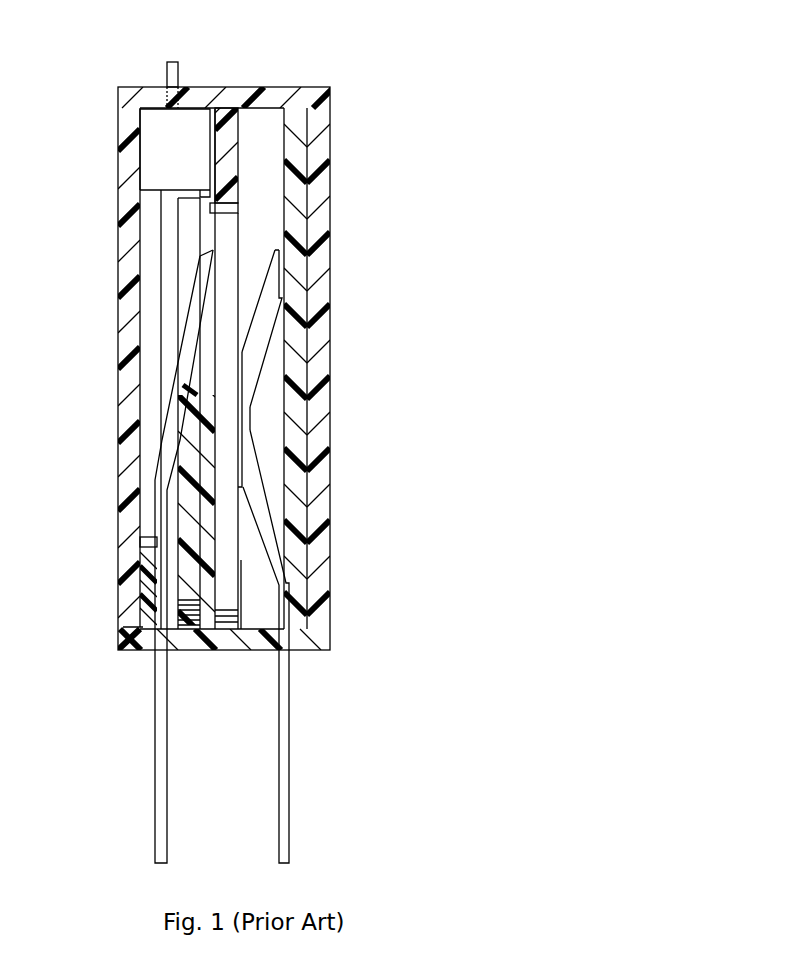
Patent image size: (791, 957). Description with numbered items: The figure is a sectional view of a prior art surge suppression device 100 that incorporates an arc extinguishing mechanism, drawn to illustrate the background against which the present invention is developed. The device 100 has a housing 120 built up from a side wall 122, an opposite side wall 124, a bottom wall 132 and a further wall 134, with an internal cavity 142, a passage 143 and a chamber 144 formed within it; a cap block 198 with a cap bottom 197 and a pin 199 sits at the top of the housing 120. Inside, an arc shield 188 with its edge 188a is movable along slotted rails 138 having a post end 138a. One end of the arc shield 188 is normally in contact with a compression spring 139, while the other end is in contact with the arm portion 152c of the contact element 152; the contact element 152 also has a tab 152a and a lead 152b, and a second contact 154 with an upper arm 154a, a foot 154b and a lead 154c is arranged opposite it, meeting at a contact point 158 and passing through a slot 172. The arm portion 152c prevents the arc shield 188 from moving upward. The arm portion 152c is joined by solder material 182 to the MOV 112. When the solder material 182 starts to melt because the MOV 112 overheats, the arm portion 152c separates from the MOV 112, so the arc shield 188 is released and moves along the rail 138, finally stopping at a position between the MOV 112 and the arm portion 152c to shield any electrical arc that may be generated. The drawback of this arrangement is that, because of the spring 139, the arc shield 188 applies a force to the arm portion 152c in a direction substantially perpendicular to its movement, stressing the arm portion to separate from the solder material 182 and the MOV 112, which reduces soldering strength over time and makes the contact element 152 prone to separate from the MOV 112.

The prior art lamp assembly 100 is at (392, 47).
The MOV 112 is at (232, 230).
The housing 120 is at (333, 135).
The housing side wall 122 is at (128, 652).
The housing opposite side wall 124 is at (332, 219).
The housing bottom wall 132 is at (325, 638).
The housing wall 134 is at (297, 444).
The slotted rail 138 is at (162, 256).
The post end 138a is at (185, 222).
The compression spring 139 is at (188, 598).
The cavity 142 is at (210, 530).
The passage 143 is at (207, 382).
The chamber 144 is at (258, 123).
The contact element 152 is at (158, 468).
The first contact tab 152a is at (157, 565).
The first contact lead 152b is at (160, 790).
The arm portion 152c is at (180, 370).
The second contact 154 is at (265, 493).
The second contact upper arm 154a is at (265, 373).
The second contact foot 154b is at (250, 444).
The second contact lead 154c is at (284, 788).
The contact point 158 is at (240, 419).
The slot 172 is at (148, 595).
The solder material 182 is at (212, 273).
The arc shield 188 is at (183, 490).
The spacer edge 188a is at (188, 273).
The cap bottom 197 is at (173, 192).
The cap block 198 is at (153, 125).
The pin 199 is at (167, 65).